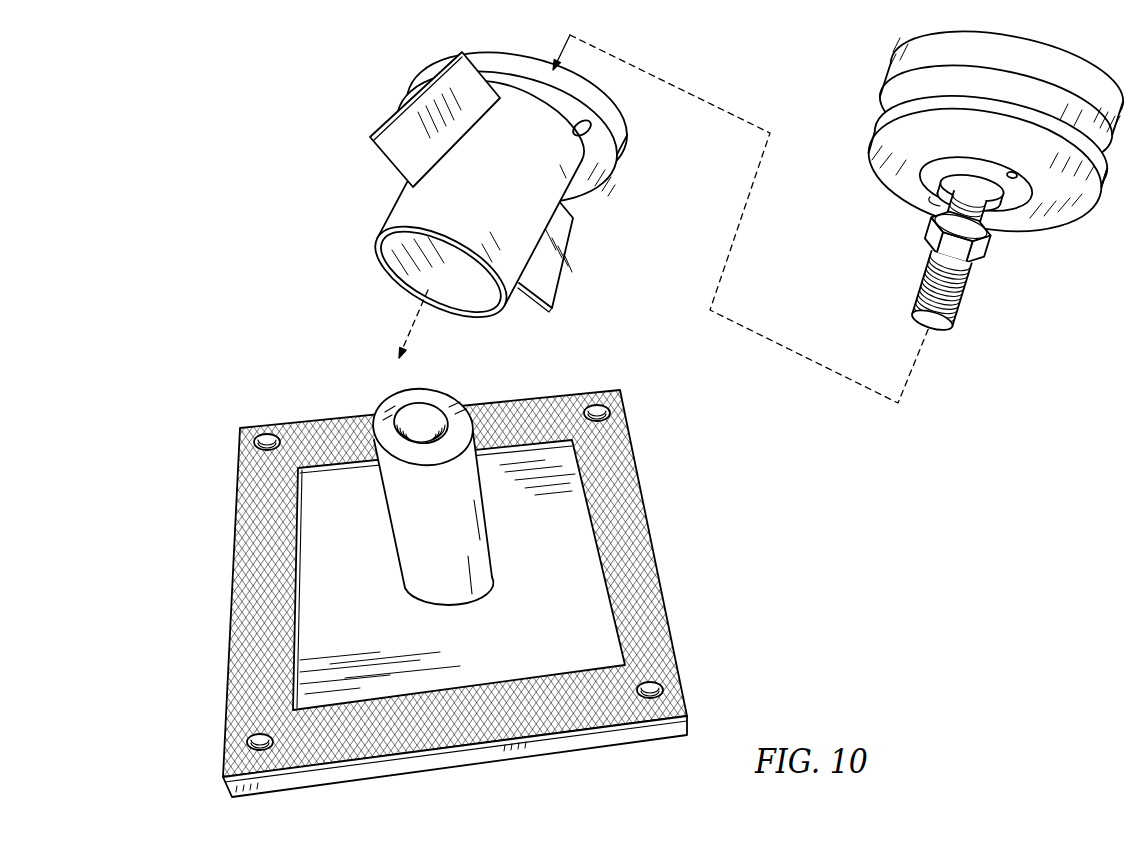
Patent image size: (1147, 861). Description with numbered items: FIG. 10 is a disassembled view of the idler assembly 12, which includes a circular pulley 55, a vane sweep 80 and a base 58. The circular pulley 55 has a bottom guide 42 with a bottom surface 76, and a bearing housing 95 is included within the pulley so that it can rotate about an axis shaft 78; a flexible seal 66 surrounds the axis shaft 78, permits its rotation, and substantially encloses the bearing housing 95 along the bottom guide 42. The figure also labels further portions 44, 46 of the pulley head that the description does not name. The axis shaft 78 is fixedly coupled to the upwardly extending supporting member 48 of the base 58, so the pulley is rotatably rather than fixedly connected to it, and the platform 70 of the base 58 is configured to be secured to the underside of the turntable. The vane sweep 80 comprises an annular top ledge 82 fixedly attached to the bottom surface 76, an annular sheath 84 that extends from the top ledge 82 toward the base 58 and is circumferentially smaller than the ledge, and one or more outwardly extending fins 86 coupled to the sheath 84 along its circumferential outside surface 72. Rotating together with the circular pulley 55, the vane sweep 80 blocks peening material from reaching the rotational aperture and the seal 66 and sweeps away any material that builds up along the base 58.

The idler assembly 12 is at (805, 44).
The vane sweep 80 is at (394, 70).
The annular top ledge 82 is at (617, 155).
The annular sheath 84 is at (397, 213).
The outwardly extending fins 86 is at (550, 280).
The circumferential outside surface 72 is at (497, 285).
The disc assembly 44 is at (877, 91).
The upper disc 46 is at (1080, 82).
The bottom guide 42 is at (1085, 192).
The circular pulley 55 is at (1101, 234).
The bottom surface 76 is at (1060, 220).
The bearing housing 95 is at (930, 172).
The flexible seal 66 is at (1012, 200).
The axis shaft 78 is at (983, 200).
The base 58 is at (677, 541).
The supporting member 48 is at (470, 535).
The platform 70 is at (570, 625).